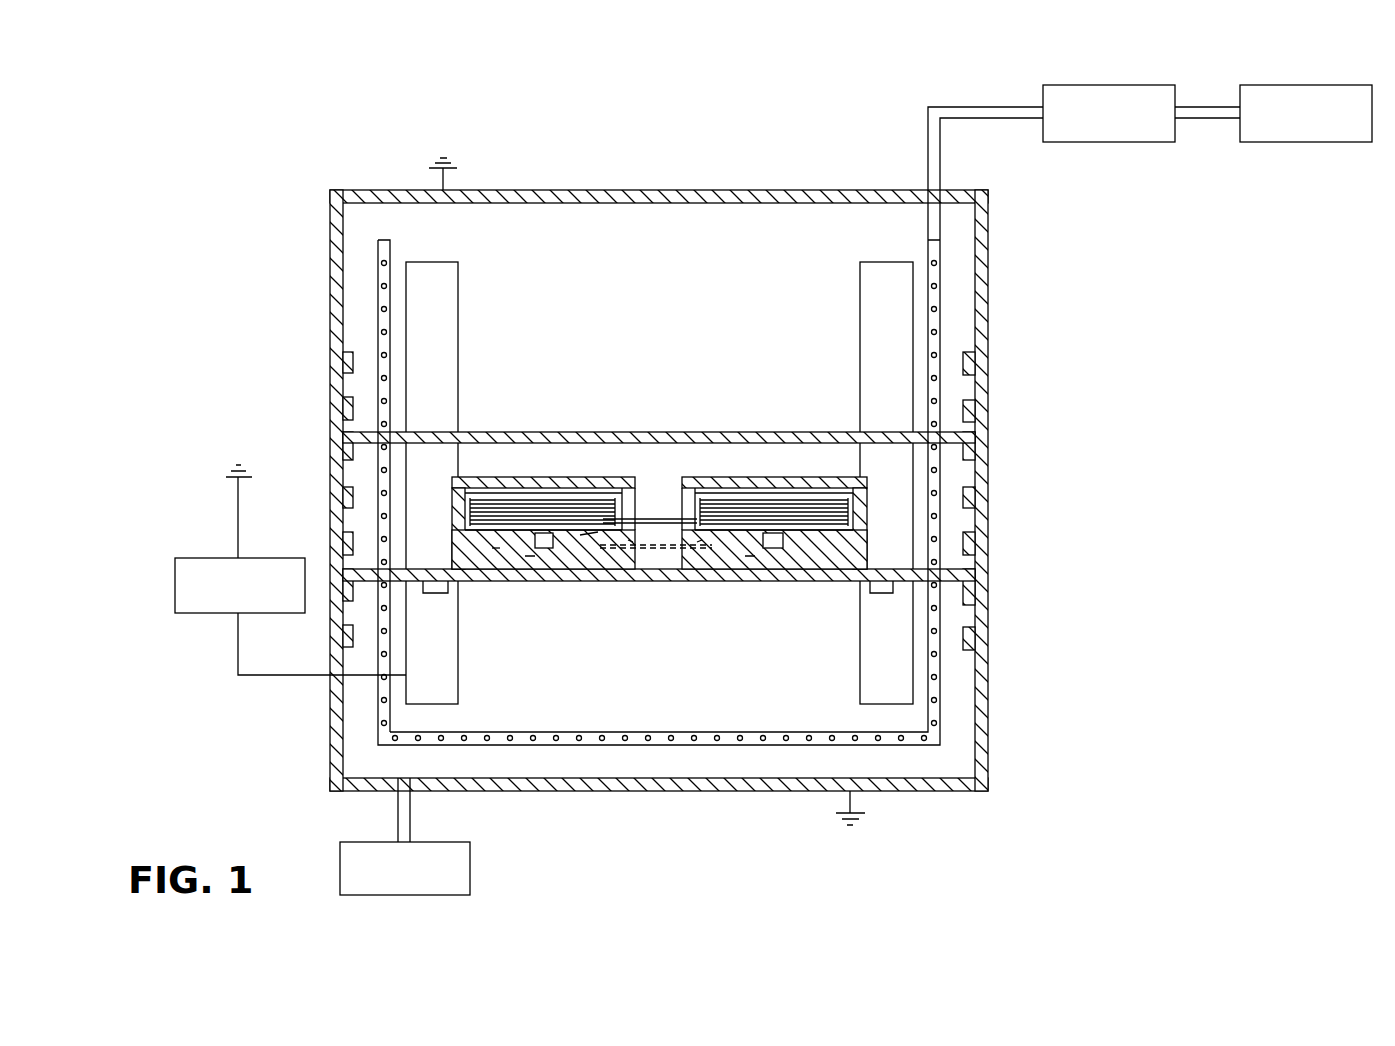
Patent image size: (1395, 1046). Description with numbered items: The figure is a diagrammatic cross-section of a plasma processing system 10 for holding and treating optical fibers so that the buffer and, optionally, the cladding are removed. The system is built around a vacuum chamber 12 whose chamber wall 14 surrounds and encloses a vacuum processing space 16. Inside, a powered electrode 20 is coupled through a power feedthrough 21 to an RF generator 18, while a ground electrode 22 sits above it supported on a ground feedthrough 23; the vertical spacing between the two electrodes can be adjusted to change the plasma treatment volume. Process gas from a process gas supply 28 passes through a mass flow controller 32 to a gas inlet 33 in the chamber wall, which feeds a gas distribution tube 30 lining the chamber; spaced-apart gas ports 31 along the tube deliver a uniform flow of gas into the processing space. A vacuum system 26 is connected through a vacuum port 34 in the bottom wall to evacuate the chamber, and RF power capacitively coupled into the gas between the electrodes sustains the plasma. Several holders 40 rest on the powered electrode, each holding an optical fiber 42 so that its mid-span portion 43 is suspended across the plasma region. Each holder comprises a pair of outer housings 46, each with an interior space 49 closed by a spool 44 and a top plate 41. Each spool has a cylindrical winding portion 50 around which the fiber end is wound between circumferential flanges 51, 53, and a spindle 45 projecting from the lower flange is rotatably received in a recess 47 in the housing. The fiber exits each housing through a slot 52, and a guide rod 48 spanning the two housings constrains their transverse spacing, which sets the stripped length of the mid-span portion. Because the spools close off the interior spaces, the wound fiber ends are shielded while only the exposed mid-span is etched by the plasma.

The plasma processing system 10 is at (362, 122).
The vacuum chamber 12 is at (585, 188).
The chamber wall 14 is at (988, 300).
The vacuum processing space 16 is at (669, 275).
The RF generator 18 is at (205, 558).
The powered electrode 20 is at (842, 584).
The power feedthrough 21 is at (437, 262).
The ground electrode 22 is at (727, 430).
The ground feedthrough 23 is at (330, 396).
The vacuum system 26 is at (340, 864).
The process gas supply 28 is at (1330, 85).
The gas distribution tube 30 is at (935, 638).
The gas ports 31 is at (938, 722).
The mass flow controller 32 is at (1133, 85).
The gas inlet 33 is at (930, 197).
The vacuum port 34 is at (396, 790).
The holder 40 is at (610, 460).
The top plate 41 is at (530, 492).
The optical fiber 42 is at (600, 531).
The mid-span portion 43 is at (672, 519).
The spool 44 is at (497, 477).
The spindle 45 is at (530, 555).
The outer housing 46 is at (455, 545).
The recess 47 is at (545, 548).
The guide rod 48 is at (650, 550).
The interior space 49 is at (462, 498).
The winding portion 50 is at (633, 494).
The circumferential flange 51 is at (562, 500).
The slot 52 is at (630, 545).
The circumferential flange 53 is at (497, 548).